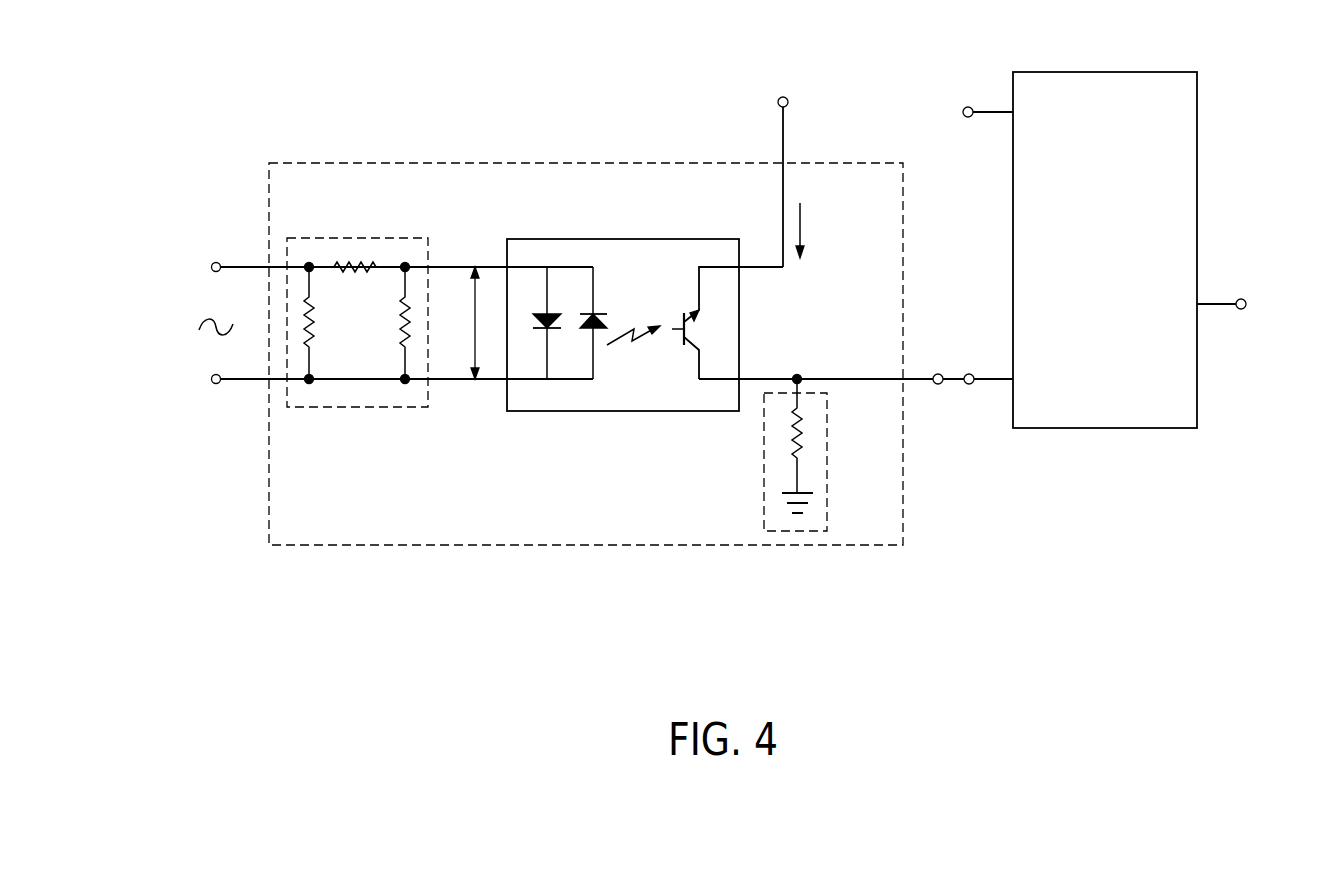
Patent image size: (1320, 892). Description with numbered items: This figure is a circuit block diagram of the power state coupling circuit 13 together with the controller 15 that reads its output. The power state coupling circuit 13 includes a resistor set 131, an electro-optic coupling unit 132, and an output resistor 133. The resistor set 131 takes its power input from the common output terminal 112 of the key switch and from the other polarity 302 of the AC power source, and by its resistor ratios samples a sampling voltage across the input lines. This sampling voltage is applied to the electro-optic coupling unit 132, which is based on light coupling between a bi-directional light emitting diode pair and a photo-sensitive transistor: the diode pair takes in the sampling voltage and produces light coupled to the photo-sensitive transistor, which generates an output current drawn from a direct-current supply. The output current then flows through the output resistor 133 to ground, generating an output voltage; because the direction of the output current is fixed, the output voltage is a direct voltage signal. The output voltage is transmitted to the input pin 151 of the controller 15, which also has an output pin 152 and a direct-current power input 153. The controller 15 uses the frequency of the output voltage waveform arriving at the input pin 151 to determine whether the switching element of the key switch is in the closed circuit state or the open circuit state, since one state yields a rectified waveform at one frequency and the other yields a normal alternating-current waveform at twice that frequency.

The common output terminal 112 is at (242, 265).
The other polarity of the AC power source 302 is at (245, 383).
The power state coupling circuit 13 is at (905, 203).
The resistor set 131 is at (397, 238).
The electro-optic coupling unit 132 is at (647, 239).
The output resistor 133 is at (827, 462).
The controller 15 is at (1062, 72).
The input pin 151 is at (995, 380).
The output pin 152 is at (1198, 305).
The DC power input 153 is at (1010, 113).